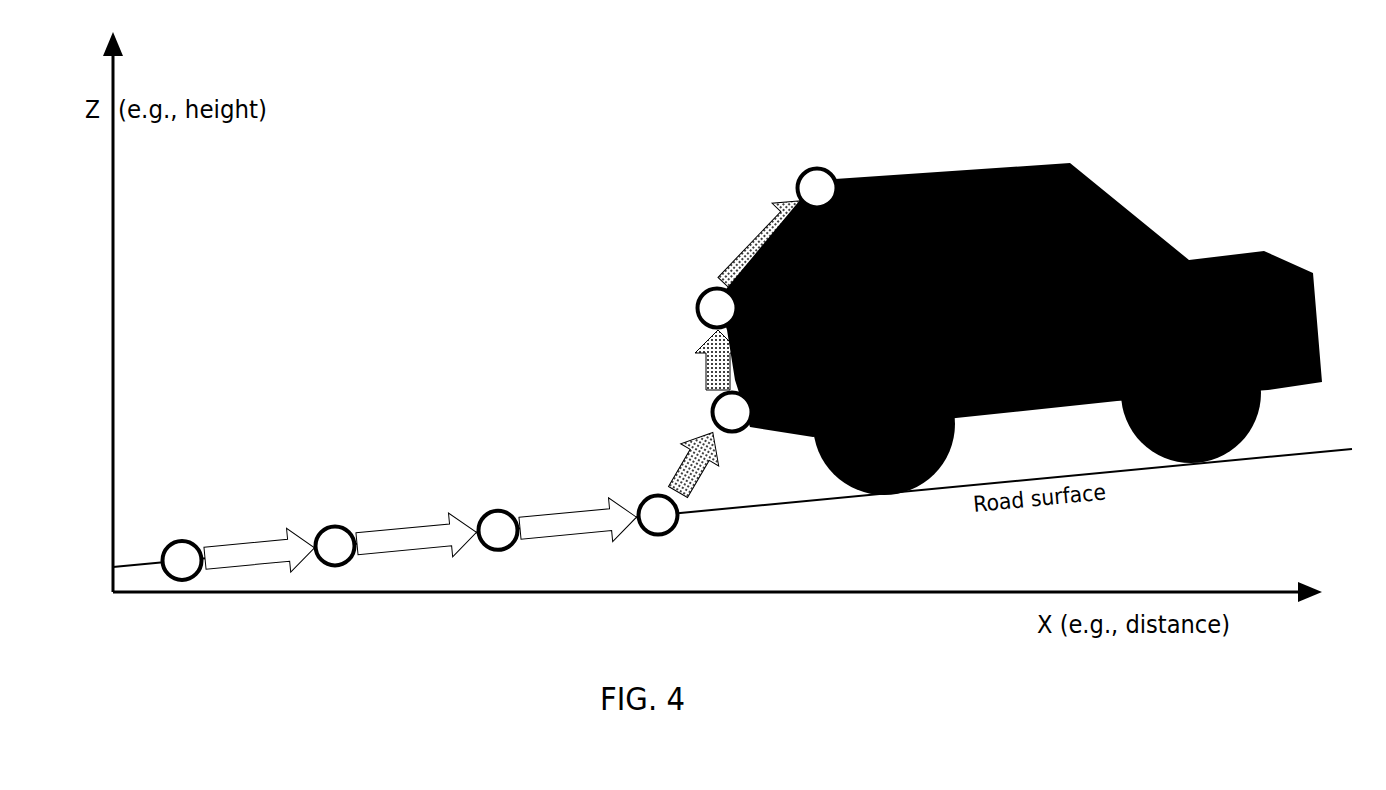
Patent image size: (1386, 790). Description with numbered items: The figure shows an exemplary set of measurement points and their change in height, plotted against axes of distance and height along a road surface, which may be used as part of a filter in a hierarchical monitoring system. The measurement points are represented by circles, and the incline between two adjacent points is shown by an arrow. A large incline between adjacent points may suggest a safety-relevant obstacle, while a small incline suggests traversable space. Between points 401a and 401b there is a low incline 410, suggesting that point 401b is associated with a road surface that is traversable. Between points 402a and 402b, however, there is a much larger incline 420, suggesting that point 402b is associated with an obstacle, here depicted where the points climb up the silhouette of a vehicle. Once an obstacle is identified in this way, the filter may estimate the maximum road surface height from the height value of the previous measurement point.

The measurement point 401a is at (337, 526).
The measurement point 401b is at (504, 511).
The measurement point 402a is at (648, 498).
The measurement point 402b is at (712, 412).
The low incline 410 is at (421, 527).
The larger incline 420 is at (684, 468).